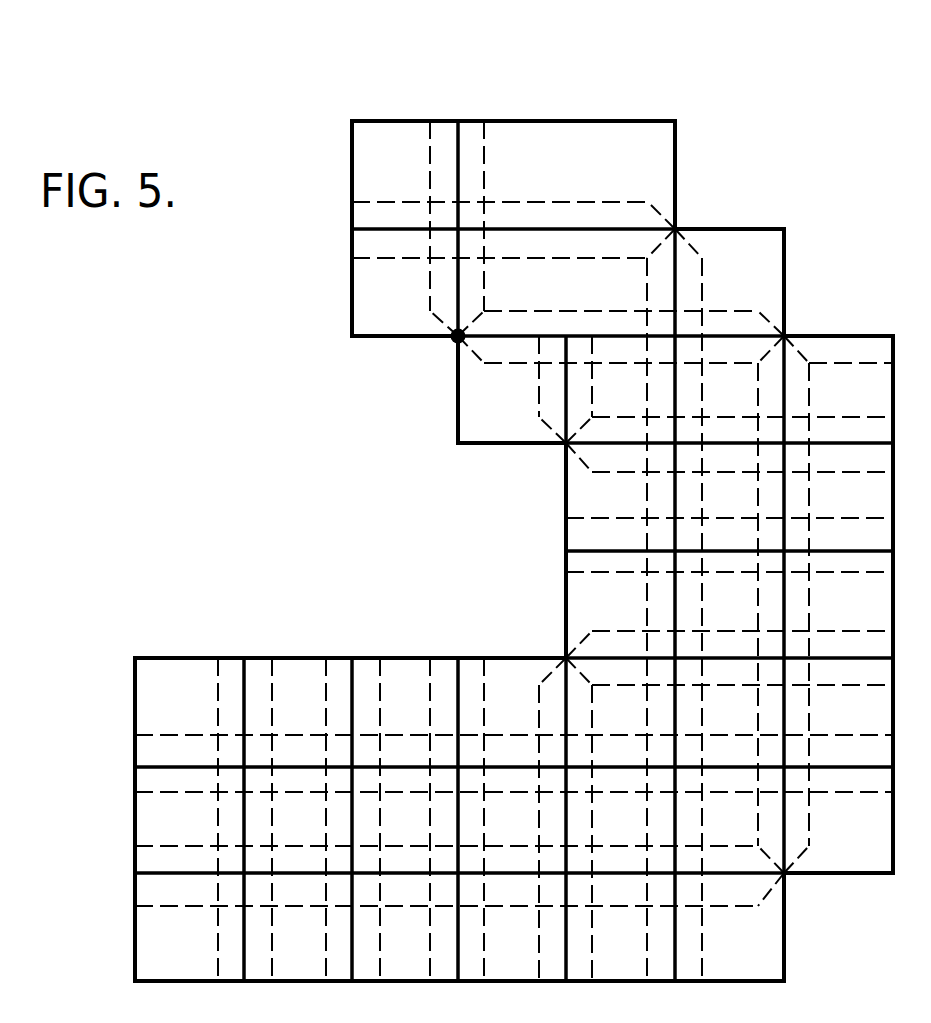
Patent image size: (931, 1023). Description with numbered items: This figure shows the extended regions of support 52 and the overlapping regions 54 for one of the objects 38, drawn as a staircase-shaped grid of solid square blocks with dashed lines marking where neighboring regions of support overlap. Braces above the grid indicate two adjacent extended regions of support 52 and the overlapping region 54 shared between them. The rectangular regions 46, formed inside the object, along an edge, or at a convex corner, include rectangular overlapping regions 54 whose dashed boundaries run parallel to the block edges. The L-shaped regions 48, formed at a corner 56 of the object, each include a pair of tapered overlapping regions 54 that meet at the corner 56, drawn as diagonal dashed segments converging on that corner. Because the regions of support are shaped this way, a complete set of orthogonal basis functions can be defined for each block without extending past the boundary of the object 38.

The object 38 is at (312, 462).
The rectangular region 46 is at (418, 833).
The L-shaped region 48 is at (522, 299).
The extended region of support 52 is at (593, 70).
The overlapping region 54 is at (492, 109).
The corner 56 is at (453, 345).